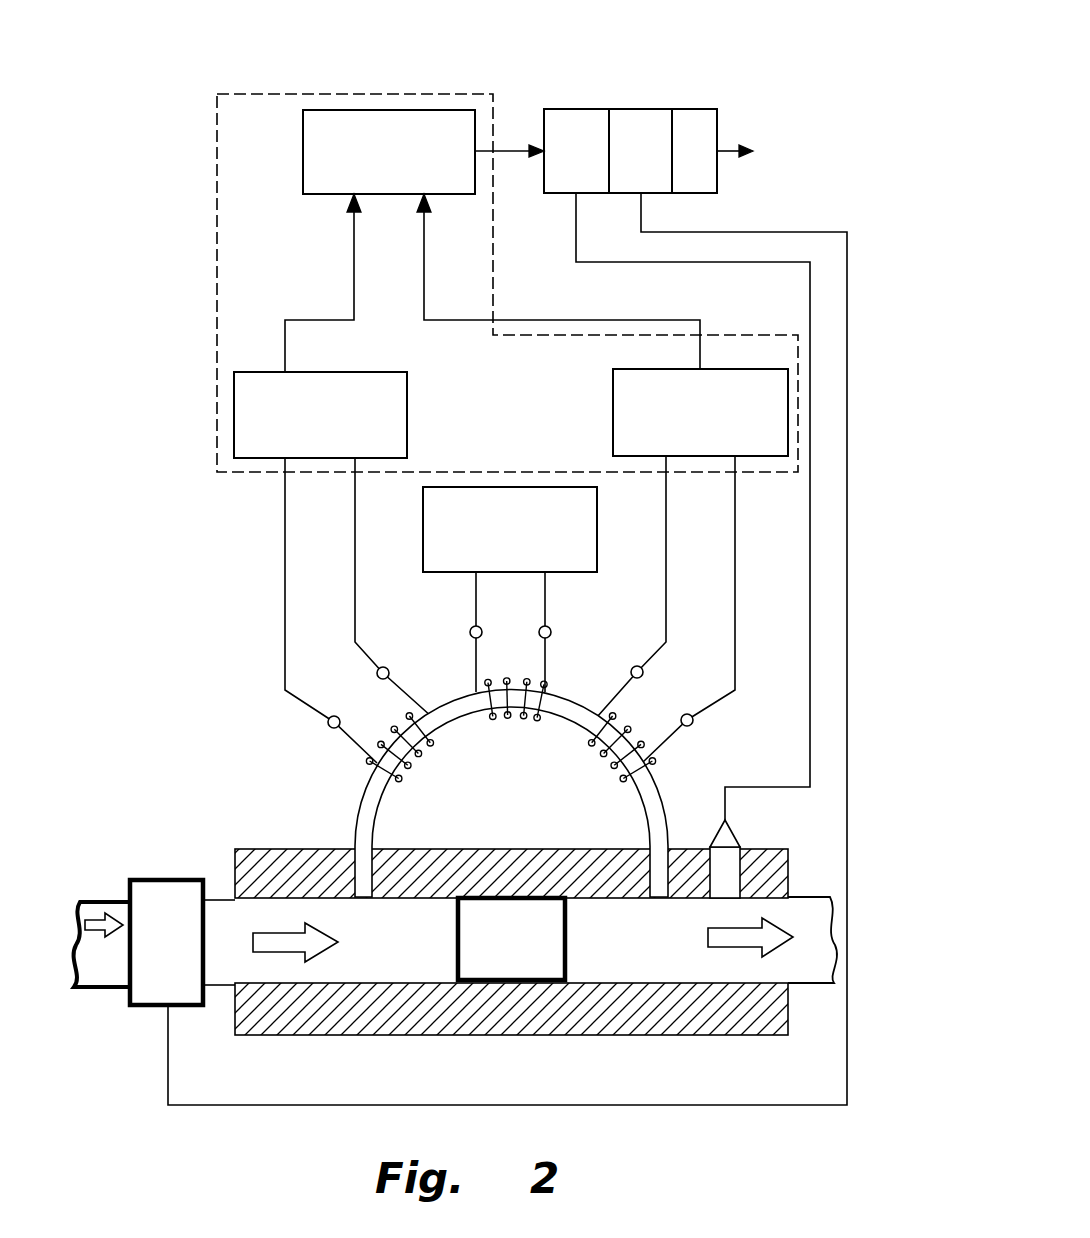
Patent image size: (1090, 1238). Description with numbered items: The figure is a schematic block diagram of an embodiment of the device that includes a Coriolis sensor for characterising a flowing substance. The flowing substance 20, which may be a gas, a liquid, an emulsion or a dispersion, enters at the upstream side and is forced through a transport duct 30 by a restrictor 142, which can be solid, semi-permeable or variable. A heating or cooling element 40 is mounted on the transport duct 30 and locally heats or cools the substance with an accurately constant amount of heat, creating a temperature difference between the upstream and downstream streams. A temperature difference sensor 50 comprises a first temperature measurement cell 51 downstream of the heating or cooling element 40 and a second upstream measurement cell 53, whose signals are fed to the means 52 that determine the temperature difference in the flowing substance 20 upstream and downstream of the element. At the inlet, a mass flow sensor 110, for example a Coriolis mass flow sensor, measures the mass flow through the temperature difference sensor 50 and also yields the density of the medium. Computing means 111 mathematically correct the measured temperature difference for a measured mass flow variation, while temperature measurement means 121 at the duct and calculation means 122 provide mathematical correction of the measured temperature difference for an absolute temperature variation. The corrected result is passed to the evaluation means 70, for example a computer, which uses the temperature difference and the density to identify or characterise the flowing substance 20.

The flowing substance 20 is at (108, 900).
The transport duct 30 is at (378, 822).
The heating or cooling element 40 is at (433, 573).
The temperature difference sensor 50 is at (279, 94).
The first temperature measurement cell 51 is at (742, 369).
The means to determine a temperature difference 52 is at (393, 110).
The second upstream measurement cell 53 is at (254, 372).
The evaluation means 70 is at (711, 109).
The mass flow sensor 110 is at (168, 880).
The computing means 111 is at (631, 109).
The temperature measurement means 121 is at (740, 835).
The calculation means 122 is at (556, 109).
The restrictor 142 is at (512, 948).